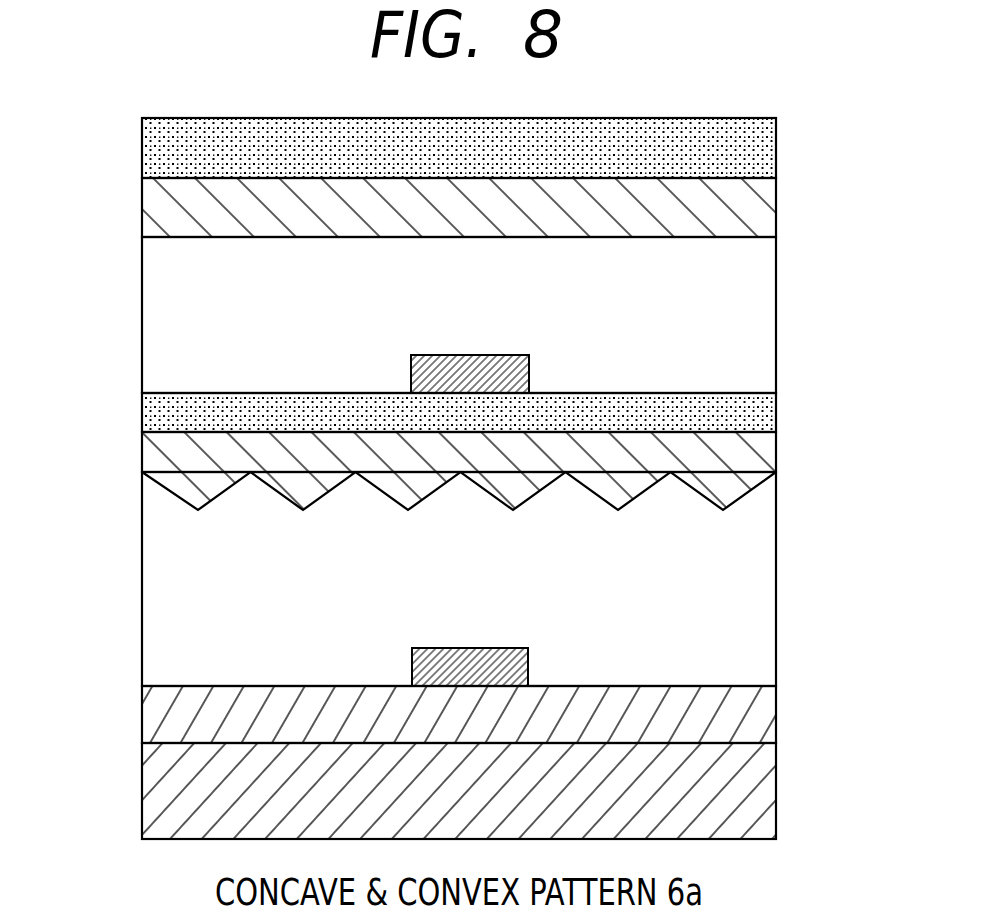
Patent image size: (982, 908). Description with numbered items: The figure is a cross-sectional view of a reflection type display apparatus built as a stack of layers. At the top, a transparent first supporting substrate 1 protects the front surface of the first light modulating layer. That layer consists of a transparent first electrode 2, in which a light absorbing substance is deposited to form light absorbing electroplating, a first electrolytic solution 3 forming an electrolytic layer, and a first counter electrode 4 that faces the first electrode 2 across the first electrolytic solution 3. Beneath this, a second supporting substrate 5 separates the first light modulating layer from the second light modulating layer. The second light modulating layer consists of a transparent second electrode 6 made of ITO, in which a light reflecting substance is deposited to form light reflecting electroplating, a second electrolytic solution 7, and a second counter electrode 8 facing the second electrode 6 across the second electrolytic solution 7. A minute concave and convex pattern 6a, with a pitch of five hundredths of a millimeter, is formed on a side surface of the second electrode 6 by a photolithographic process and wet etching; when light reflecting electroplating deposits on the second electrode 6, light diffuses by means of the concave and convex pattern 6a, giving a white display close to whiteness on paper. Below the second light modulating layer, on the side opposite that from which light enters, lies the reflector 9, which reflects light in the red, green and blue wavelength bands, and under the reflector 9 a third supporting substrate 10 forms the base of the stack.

The first supporting substrate 1 is at (145, 140).
The first electrode 2 is at (145, 209).
The first electrolytic solution 3 is at (148, 315).
The first counter electrode 4 is at (475, 355).
The second supporting substrate 5 is at (145, 406).
The second electrode 6 is at (145, 448).
The concave and convex pattern 6a is at (730, 488).
The second electrolytic solution 7 is at (148, 590).
The second counter electrode 8 is at (473, 648).
The reflector 9 is at (145, 712).
The third supporting substrate 10 is at (148, 791).